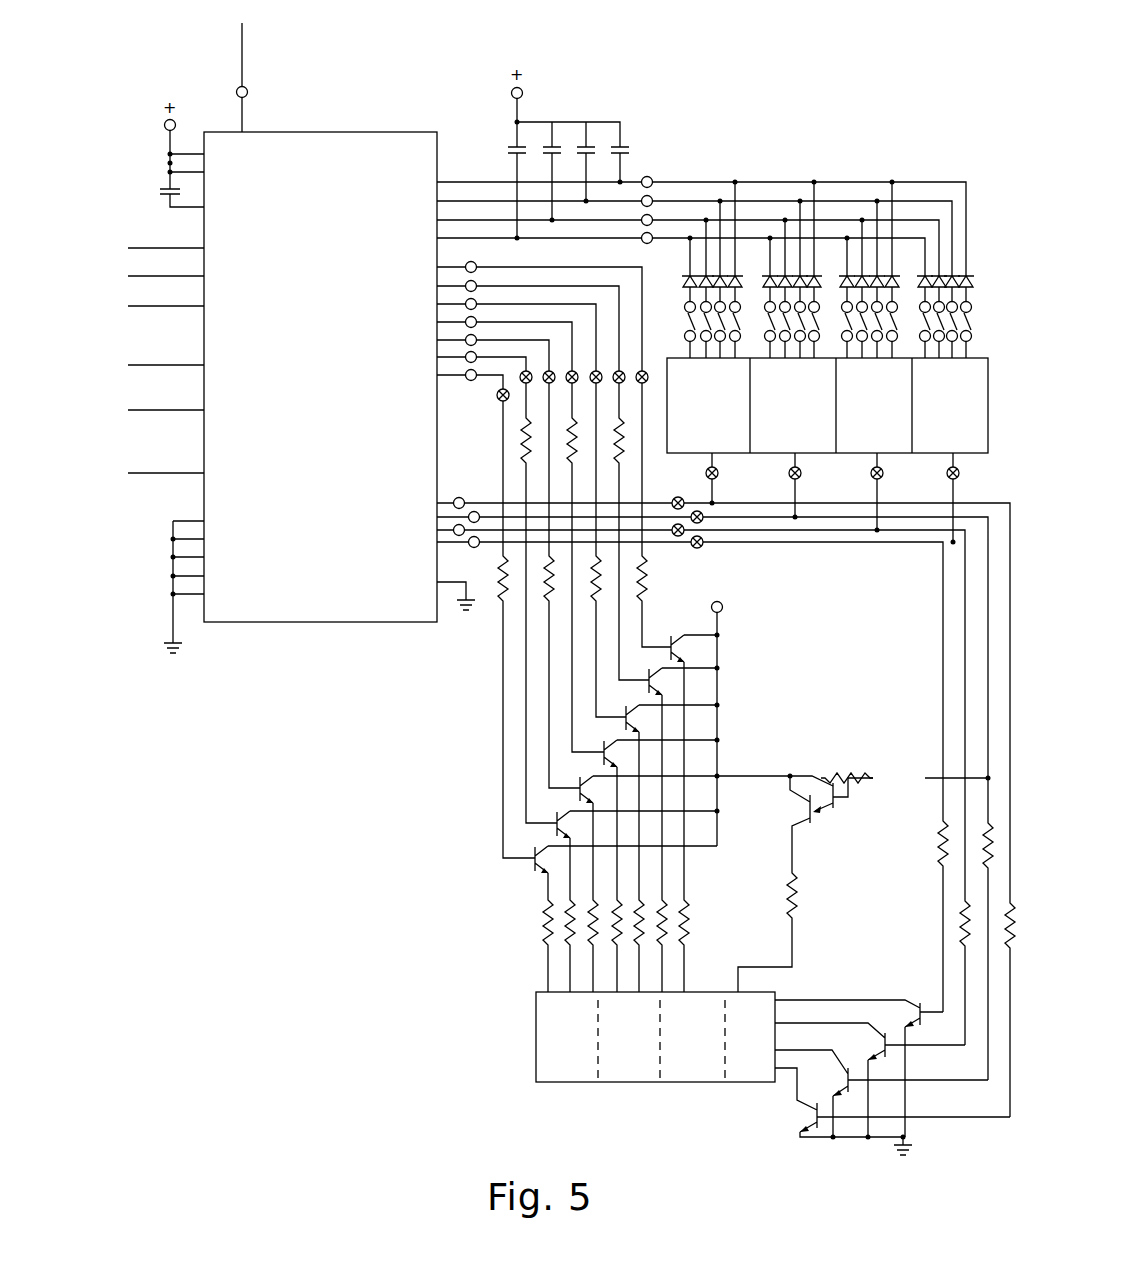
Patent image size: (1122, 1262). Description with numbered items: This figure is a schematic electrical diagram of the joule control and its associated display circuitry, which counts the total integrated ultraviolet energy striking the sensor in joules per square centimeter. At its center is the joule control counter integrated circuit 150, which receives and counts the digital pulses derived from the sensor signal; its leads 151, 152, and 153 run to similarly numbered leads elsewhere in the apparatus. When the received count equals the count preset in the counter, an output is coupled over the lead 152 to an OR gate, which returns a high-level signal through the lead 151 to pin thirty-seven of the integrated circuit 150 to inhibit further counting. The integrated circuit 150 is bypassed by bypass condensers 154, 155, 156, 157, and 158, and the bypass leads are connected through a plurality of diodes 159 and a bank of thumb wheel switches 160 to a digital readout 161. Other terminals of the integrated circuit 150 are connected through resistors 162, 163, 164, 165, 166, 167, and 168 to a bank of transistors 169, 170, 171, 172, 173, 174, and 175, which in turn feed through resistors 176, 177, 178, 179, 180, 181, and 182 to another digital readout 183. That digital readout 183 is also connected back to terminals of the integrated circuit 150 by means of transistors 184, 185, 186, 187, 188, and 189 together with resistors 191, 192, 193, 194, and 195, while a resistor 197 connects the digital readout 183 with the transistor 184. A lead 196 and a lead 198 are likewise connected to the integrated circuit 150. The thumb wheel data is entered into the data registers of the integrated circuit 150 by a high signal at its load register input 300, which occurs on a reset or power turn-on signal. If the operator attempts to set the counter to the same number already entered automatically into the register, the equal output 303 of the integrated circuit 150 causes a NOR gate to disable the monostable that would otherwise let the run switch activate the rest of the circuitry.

The joule control counter integrated circuit 150 is at (336, 132).
The lead 151 is at (130, 248).
The lead 152 is at (130, 276).
The lead 153 is at (130, 306).
The bypass condenser 154 is at (168, 187).
The bypass condenser 155 is at (514, 145).
The bypass condenser 156 is at (546, 148).
The bypass condenser 157 is at (580, 148).
The bypass condenser 158 is at (615, 148).
The diodes 159 is at (978, 278).
The bank of thumb wheel switches 160 is at (972, 322).
The digital readout 161 is at (988, 420).
The resistor 162 is at (520, 455).
The resistor 163 is at (566, 455).
The resistor 164 is at (612, 455).
The resistor 165 is at (498, 602).
The resistor 166 is at (546, 597).
The resistor 167 is at (593, 597).
The resistor 168 is at (647, 590).
The transistor 169 is at (534, 859).
The transistor 170 is at (556, 824).
The transistor 171 is at (579, 789).
The transistor 172 is at (603, 755).
The transistor 173 is at (625, 719).
The transistor 174 is at (648, 683).
The transistor 175 is at (672, 650).
The resistor 176 is at (541, 927).
The resistor 177 is at (568, 906).
The resistor 178 is at (591, 944).
The resistor 179 is at (614, 906).
The resistor 180 is at (637, 944).
The resistor 181 is at (658, 906).
The resistor 182 is at (688, 932).
The digital readout 183 is at (638, 1084).
The transistor 184 is at (803, 800).
The transistor 185 is at (822, 782).
The transistor 186 is at (817, 1102).
The transistor 187 is at (845, 1072).
The transistor 188 is at (878, 1038).
The transistor 189 is at (912, 1000).
The resistor 191 is at (882, 770).
The resistor 192 is at (937, 850).
The resistor 193 is at (961, 936).
The resistor 194 is at (982, 826).
The resistor 195 is at (1012, 926).
The lead 196 is at (242, 50).
The resistor 197 is at (798, 900).
The lead 198 is at (130, 473).
The load register input 300 is at (130, 365).
The equal output 303 is at (130, 410).